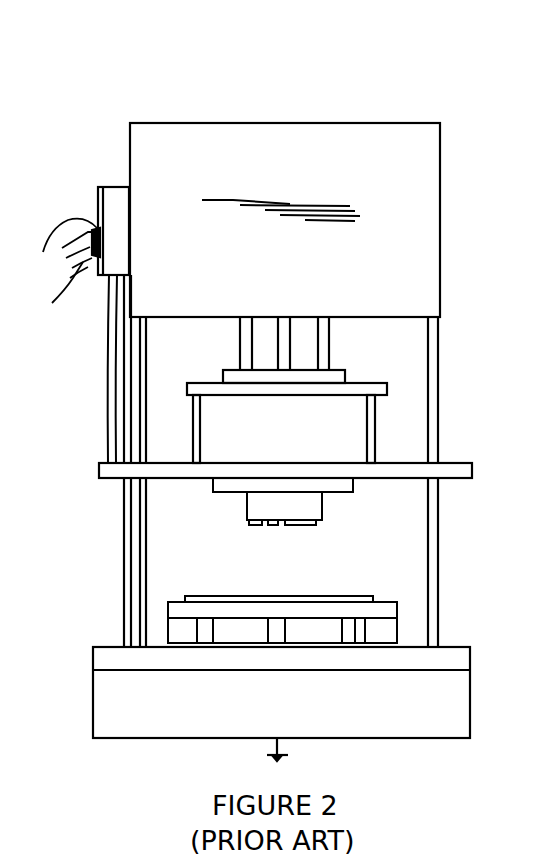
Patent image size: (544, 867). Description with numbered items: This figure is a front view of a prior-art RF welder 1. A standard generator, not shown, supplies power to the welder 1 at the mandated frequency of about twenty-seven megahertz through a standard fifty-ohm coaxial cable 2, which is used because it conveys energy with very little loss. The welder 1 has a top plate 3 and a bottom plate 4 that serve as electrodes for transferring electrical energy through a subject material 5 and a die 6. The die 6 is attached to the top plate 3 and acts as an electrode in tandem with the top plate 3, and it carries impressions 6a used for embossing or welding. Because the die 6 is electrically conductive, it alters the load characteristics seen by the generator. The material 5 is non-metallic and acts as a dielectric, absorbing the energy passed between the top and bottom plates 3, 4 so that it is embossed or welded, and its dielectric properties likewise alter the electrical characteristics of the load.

The RF welder 1 is at (462, 75).
The coaxial cable 2 is at (108, 370).
The top plate 3 is at (473, 463).
The bottom plate 4 is at (397, 607).
The subject material 5 is at (377, 598).
The die 6 is at (243, 512).
The impressions 6a is at (245, 527).